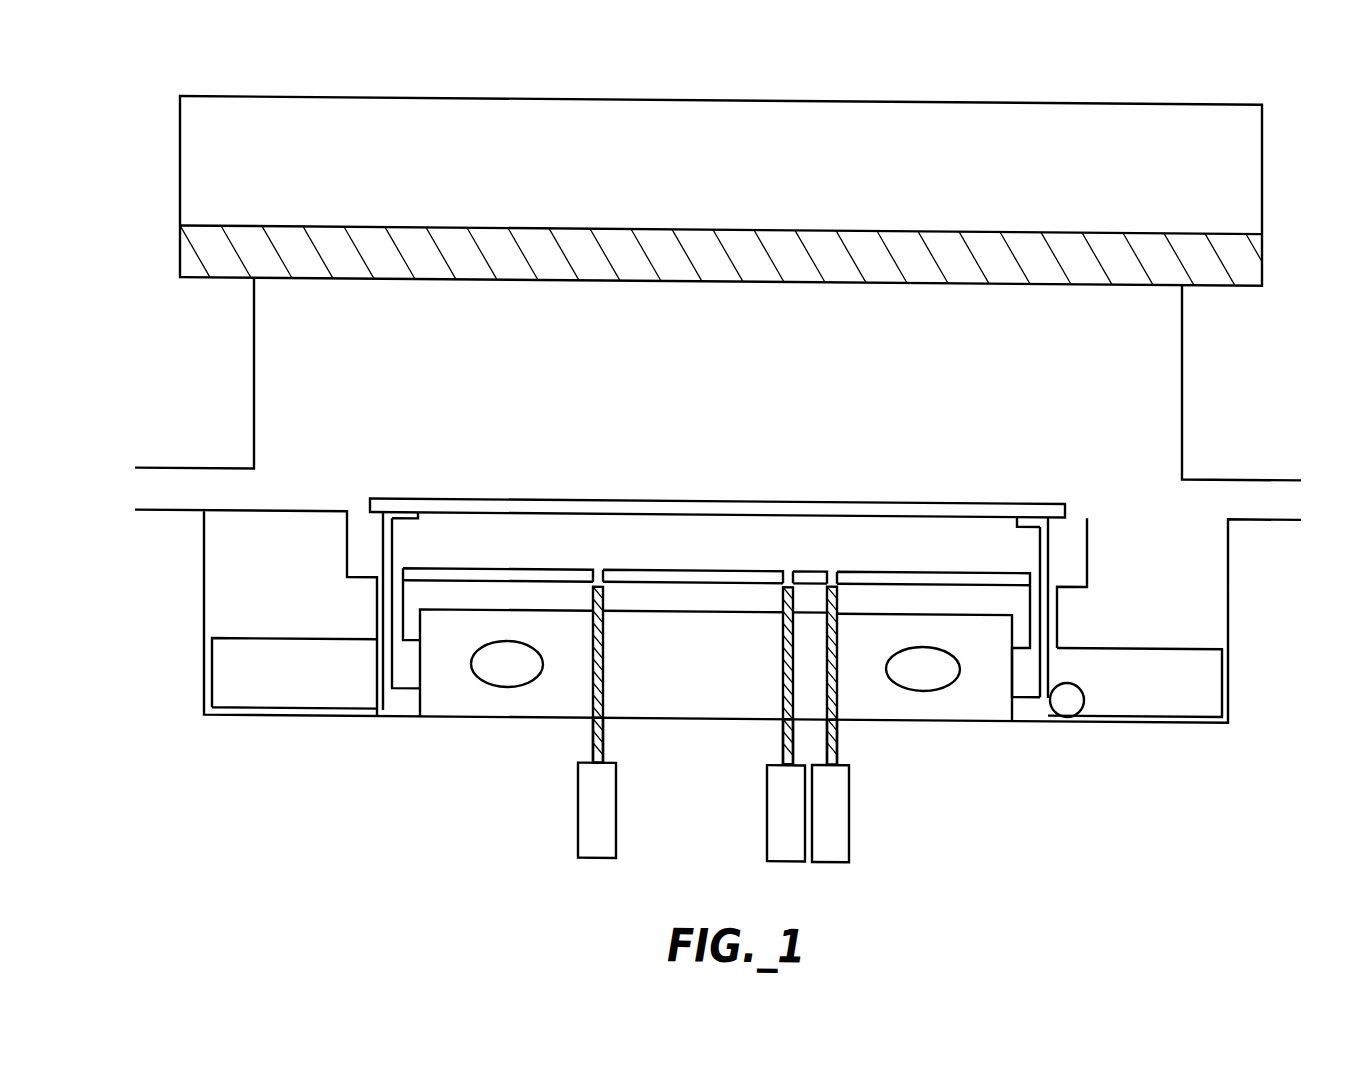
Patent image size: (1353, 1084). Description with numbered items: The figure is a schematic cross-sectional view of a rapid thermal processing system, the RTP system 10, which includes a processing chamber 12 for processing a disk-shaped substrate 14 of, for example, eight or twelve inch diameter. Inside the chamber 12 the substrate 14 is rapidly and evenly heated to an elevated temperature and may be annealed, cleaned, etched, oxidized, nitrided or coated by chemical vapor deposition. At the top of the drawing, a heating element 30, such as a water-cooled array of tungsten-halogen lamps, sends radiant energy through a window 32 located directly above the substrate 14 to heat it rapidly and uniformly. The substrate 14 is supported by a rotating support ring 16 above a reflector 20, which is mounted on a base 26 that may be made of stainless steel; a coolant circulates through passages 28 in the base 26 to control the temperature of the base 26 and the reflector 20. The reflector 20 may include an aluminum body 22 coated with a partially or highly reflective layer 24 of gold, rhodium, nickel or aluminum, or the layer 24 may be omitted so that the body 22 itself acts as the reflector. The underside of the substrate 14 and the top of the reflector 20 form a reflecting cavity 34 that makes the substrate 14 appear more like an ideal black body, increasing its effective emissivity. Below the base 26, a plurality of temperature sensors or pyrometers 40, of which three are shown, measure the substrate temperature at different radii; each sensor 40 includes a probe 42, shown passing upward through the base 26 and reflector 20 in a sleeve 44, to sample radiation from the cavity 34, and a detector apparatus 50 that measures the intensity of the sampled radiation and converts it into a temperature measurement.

The RTP system 10 is at (188, 406).
The processing chamber 12 is at (707, 375).
The substrate 14 is at (555, 493).
The rotating support ring 16 is at (395, 544).
The reflector 20 is at (989, 564).
The body 22 is at (918, 590).
The reflective layer 24 is at (855, 566).
The base 26 is at (457, 698).
The passages 28 is at (945, 682).
The heating element 30 is at (1248, 171).
The window 32 is at (1255, 243).
The reflecting cavity 34 is at (729, 546).
The temperature sensor 40 is at (715, 810).
The probe 42 is at (603, 728).
The pin sleeve 44 is at (593, 692).
The detector apparatus 50 is at (578, 783).